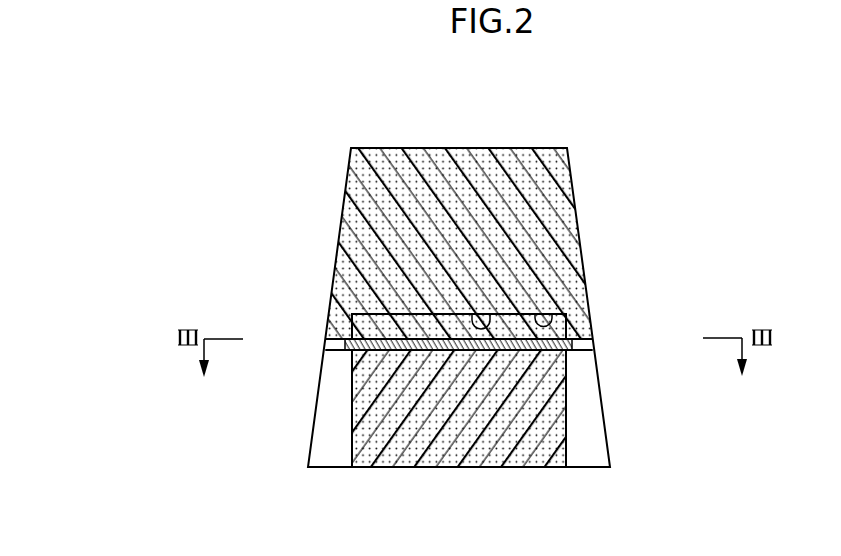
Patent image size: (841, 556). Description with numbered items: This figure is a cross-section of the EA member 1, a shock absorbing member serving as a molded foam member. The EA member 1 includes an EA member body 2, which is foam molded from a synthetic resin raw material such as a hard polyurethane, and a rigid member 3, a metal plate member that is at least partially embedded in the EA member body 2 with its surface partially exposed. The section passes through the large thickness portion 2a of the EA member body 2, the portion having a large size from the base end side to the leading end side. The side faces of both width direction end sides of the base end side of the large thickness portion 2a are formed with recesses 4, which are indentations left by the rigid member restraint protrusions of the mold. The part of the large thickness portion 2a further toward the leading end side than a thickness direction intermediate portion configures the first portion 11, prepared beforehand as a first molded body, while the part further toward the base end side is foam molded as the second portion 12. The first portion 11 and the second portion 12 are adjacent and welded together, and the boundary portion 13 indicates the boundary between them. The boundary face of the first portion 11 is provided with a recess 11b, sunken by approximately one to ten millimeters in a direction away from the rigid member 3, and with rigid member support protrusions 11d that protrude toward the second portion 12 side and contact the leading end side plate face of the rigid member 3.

The EA member 1 is at (603, 128).
The EA member body 2 is at (340, 232).
The large thickness portion 2a is at (352, 132).
The rigid member 3 is at (372, 334).
The recess 4 is at (352, 431).
The first portion 11 is at (492, 211).
The recess 11b is at (479, 320).
The rigid member support protrusions 11d is at (547, 322).
The second portion 12 is at (506, 421).
The boundary portion 13 is at (326, 339).